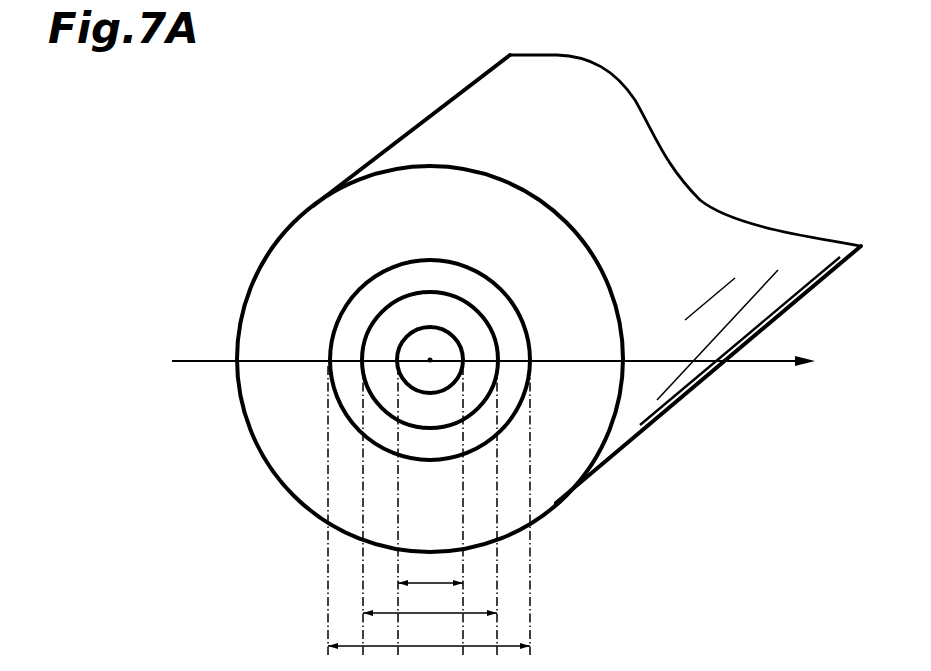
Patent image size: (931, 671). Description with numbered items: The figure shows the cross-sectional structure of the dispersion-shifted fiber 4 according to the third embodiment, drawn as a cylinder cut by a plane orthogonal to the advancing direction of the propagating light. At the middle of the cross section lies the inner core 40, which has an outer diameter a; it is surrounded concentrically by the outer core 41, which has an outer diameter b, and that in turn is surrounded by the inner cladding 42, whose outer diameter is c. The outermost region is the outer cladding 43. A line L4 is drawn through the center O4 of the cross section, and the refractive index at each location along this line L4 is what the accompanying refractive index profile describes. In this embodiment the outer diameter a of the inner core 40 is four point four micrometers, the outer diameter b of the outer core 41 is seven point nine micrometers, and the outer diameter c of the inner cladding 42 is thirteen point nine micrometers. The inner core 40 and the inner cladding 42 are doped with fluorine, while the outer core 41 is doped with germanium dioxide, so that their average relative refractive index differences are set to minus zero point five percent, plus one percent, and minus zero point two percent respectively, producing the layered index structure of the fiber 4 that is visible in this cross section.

The dispersion-shifted fiber 4 is at (650, 238).
The inner core 40 is at (428, 345).
The outer core 41 is at (378, 382).
The inner cladding 42 is at (358, 412).
The outer cladding 43 is at (335, 238).
The center O4 is at (430, 360).
The line L4 is at (516, 366).
The outer diameter of the inner core a is at (430, 570).
The outer diameter of the outer core b is at (430, 600).
The outer diameter of the inner cladding c is at (429, 632).